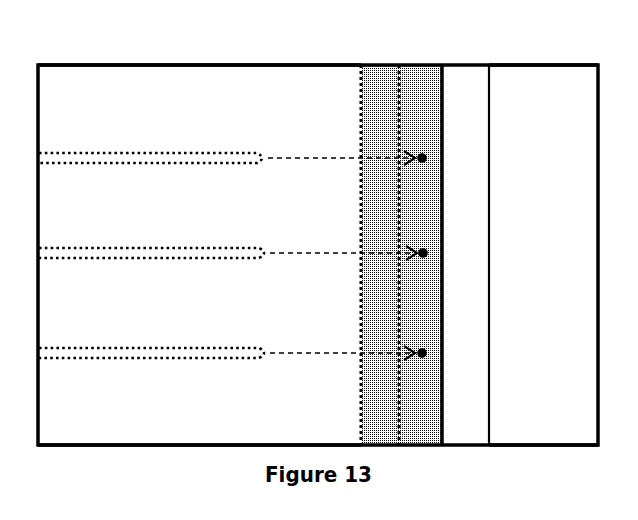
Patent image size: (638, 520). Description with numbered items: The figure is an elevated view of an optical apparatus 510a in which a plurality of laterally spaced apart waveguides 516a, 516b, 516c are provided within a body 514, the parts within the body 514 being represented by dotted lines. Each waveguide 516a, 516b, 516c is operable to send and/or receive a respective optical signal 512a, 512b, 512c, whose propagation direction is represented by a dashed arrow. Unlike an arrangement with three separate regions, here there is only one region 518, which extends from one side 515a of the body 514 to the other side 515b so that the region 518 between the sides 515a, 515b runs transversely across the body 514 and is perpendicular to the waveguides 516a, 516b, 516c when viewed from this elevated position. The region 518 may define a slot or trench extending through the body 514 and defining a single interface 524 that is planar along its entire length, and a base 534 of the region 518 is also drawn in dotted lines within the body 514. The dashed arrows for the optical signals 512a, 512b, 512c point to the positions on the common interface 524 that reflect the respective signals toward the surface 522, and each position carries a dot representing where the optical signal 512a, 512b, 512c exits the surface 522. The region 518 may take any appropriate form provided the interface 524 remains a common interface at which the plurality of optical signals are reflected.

The optical apparatus 510a is at (47, 48).
The body 514 is at (118, 73).
The surface 522 is at (162, 96).
The first waveguide 516a is at (80, 152).
The second waveguide 516b is at (80, 247).
The third waveguide 516c is at (78, 347).
The first optical signal 512a is at (347, 150).
The second optical signal 512b is at (348, 242).
The third optical signal 512c is at (348, 344).
The base 534 is at (380, 80).
The interface 524 is at (420, 80).
The region 518 is at (474, 142).
The first side 515a is at (535, 61).
The second side 515b is at (530, 449).